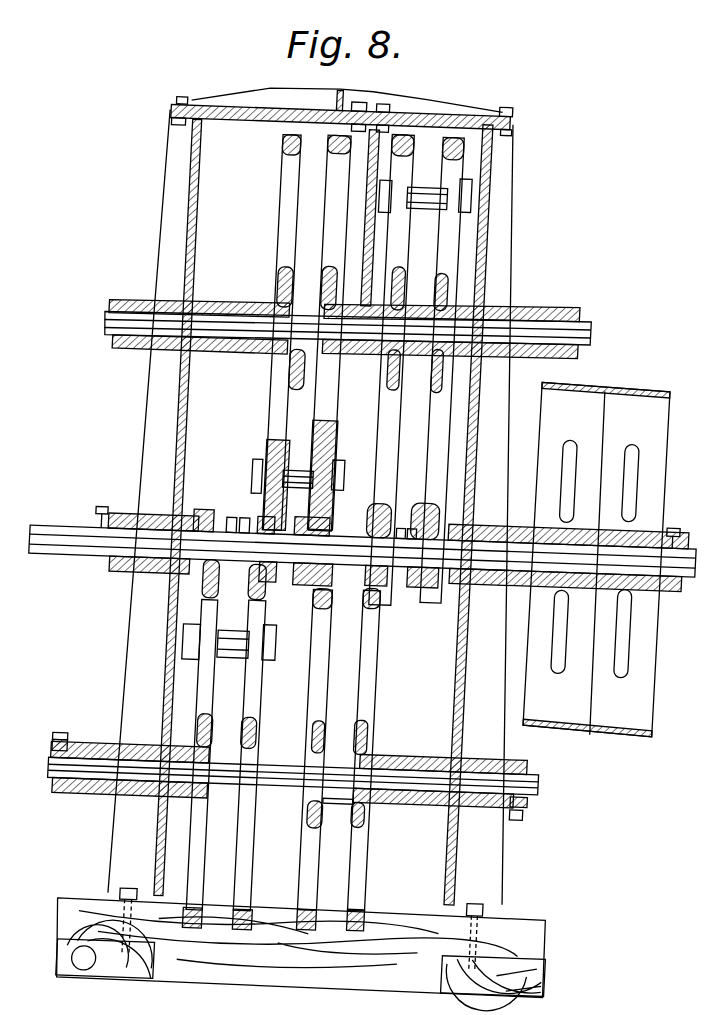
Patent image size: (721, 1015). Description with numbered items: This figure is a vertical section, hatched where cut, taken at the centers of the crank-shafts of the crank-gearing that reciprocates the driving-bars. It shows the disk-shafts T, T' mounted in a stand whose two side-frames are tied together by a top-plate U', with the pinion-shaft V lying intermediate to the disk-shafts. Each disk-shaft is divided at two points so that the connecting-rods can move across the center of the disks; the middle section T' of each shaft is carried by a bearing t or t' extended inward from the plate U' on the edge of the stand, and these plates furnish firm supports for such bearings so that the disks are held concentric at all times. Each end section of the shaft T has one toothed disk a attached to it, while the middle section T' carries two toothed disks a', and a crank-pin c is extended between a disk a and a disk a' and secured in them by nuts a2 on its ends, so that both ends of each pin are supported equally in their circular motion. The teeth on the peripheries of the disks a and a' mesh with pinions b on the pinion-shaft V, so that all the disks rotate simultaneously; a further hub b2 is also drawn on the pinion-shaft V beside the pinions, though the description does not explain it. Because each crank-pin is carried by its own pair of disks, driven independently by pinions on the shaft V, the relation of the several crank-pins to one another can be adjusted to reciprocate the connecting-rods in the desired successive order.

The top-plate U' is at (341, 123).
The toothed disk a is at (328, 532).
The toothed disk a' is at (334, 532).
The nut a2 is at (260, 462).
The pinion b is at (261, 516).
The hub on shaft V b2 is at (294, 588).
The crank-pin c is at (410, 185).
The disk-shaft T is at (321, 554).
The middle section of disk-shaft T' is at (331, 344).
The bearing t is at (281, 772).
The bearing t' is at (366, 230).
The pinion-shaft V is at (79, 538).